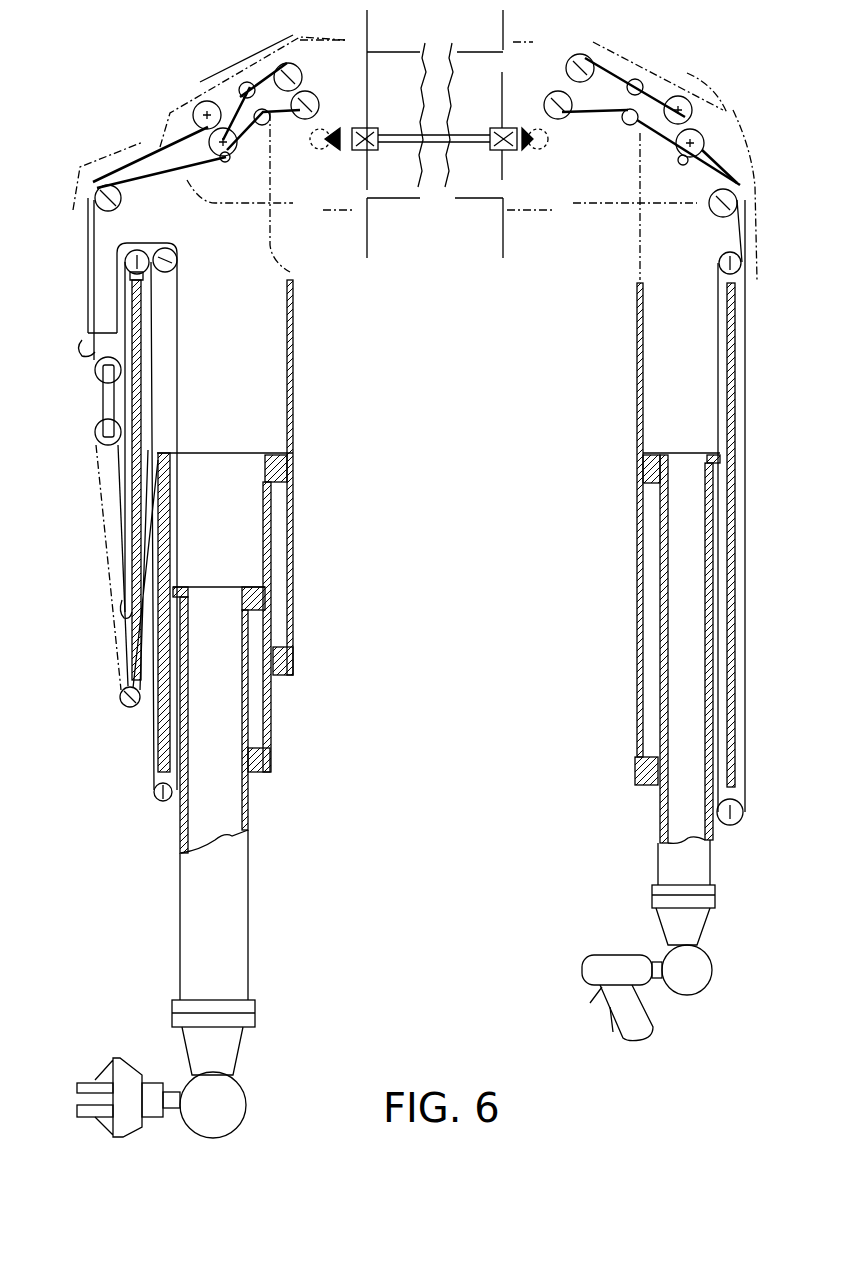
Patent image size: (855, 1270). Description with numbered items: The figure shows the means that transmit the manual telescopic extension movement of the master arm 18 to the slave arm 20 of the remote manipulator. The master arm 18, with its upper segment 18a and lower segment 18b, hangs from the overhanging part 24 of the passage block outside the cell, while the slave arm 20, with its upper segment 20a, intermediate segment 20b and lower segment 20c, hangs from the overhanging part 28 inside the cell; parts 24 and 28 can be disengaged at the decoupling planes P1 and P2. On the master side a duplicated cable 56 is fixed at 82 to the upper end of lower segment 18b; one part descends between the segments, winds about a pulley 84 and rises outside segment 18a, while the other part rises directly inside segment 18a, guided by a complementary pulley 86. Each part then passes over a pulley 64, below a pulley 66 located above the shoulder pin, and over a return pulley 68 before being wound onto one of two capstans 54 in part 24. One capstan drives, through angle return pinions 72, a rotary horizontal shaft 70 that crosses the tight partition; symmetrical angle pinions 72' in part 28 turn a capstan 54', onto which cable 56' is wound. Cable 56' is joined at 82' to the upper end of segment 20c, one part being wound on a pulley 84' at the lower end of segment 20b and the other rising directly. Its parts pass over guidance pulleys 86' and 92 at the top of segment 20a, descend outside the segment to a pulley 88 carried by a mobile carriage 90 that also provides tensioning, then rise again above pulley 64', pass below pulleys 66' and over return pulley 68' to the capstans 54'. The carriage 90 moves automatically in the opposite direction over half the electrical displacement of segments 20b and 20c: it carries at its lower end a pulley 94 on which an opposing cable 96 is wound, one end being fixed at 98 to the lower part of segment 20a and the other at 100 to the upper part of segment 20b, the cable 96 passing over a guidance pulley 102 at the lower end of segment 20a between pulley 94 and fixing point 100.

The master arm 18 is at (615, 582).
The upper segment of the master arm 18a is at (640, 405).
The lower segment of the master arm 18b is at (658, 815).
The slave arm 20 is at (323, 577).
The upper segment of the slave arm 20a is at (293, 350).
The intermediate segment of the slave arm 20b is at (272, 712).
The lower segment of the slave arm 20c is at (250, 815).
The overhanging part of the passage block 24 is at (517, 42).
The overhanging part of the passage block 28 is at (347, 42).
The decoupling plane P1 is at (366, 40).
The decoupling plane P2 is at (503, 25).
The capstan 54 is at (607, 63).
The capstan 54' is at (273, 76).
The cable 56 is at (697, 535).
The cable 56' is at (193, 111).
The pulley 64 is at (731, 452).
The pulley 64' is at (91, 238).
The pulley 66 is at (700, 111).
The pulley 66' is at (203, 96).
The return pulley 68 is at (677, 97).
The return pulley 68' is at (255, 71).
The rotary horizontal shaft 70 is at (388, 143).
The angle return pinions 72 is at (530, 148).
The angle pinions 72' is at (324, 147).
The fixing point 82 is at (681, 447).
The fixing point 82' is at (219, 579).
The pulley 84 is at (736, 842).
The pulley 84' is at (146, 809).
The complementary pulley 86 is at (703, 521).
The guidance pulley 86' is at (180, 519).
The pulley 88 is at (117, 333).
The mobile carriage 90 is at (112, 392).
The guidance pulley 92 is at (122, 250).
The pulley 94 is at (115, 432).
The opposing cable 96 is at (128, 500).
The fixing point 98 is at (128, 598).
The fixing point 100 is at (160, 452).
The guidance pulley 102 is at (124, 706).